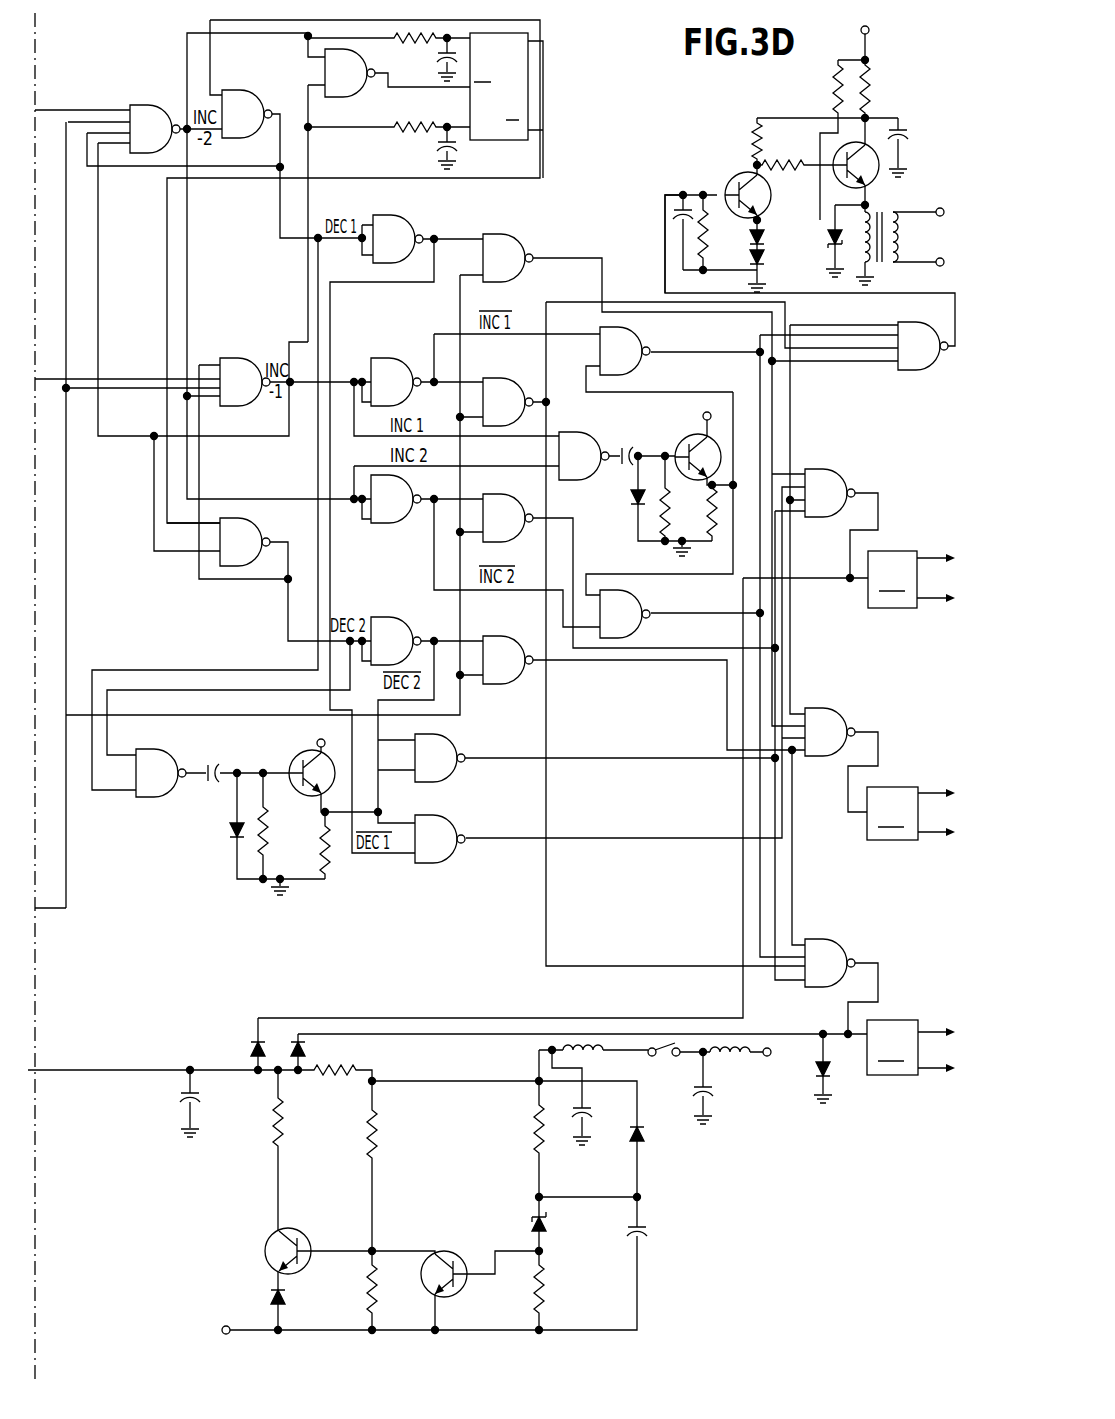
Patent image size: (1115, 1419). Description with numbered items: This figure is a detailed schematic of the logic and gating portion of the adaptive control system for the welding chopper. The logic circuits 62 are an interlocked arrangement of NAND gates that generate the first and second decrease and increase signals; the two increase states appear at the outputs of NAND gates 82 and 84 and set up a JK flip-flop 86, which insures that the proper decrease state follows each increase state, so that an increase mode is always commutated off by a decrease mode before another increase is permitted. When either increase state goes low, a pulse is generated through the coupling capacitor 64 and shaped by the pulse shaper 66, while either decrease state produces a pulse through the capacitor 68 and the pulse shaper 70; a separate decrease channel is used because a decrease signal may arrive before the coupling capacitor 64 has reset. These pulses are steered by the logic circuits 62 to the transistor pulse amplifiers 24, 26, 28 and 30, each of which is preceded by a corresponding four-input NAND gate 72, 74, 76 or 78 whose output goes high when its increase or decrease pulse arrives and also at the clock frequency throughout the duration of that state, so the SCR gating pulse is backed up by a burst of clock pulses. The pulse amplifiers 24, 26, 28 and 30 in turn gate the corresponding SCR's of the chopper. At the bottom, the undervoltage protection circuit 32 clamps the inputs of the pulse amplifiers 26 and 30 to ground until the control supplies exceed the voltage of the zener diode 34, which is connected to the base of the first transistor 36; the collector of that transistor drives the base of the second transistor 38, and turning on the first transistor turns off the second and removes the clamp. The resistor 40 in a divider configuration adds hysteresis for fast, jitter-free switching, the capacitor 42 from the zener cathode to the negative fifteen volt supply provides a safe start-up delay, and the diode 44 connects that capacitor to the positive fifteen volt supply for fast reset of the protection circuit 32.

The pulse amplifier 24 is at (896, 99).
The pulse amplifier 26 is at (914, 570).
The pulse amplifier 28 is at (913, 804).
The pulse amplifier 30 is at (913, 1038).
The undervoltage protection circuit 32 is at (685, 1188).
The zener diode 34 is at (548, 1230).
The first transistor 36 is at (462, 1257).
The second transistor 38 is at (312, 1242).
The resistor 40 is at (340, 1068).
The capacitor 42 is at (646, 1236).
The diode 44 is at (648, 1138).
The logic circuits 62 is at (118, 953).
The coupling capacitor 64 is at (625, 450).
The pulse shaper 66 is at (670, 438).
The capacitor 68 is at (218, 760).
The pulse shaper 70 is at (344, 875).
The 4-input NAND gate 72 is at (923, 368).
The 4-input NAND gate 74 is at (855, 471).
The 4-input NAND gate 76 is at (852, 712).
The 4-input NAND gate 78 is at (843, 942).
The NAND gate 82 is at (236, 355).
The NAND gate 84 is at (150, 103).
The JK flip-flop 86 is at (508, 141).